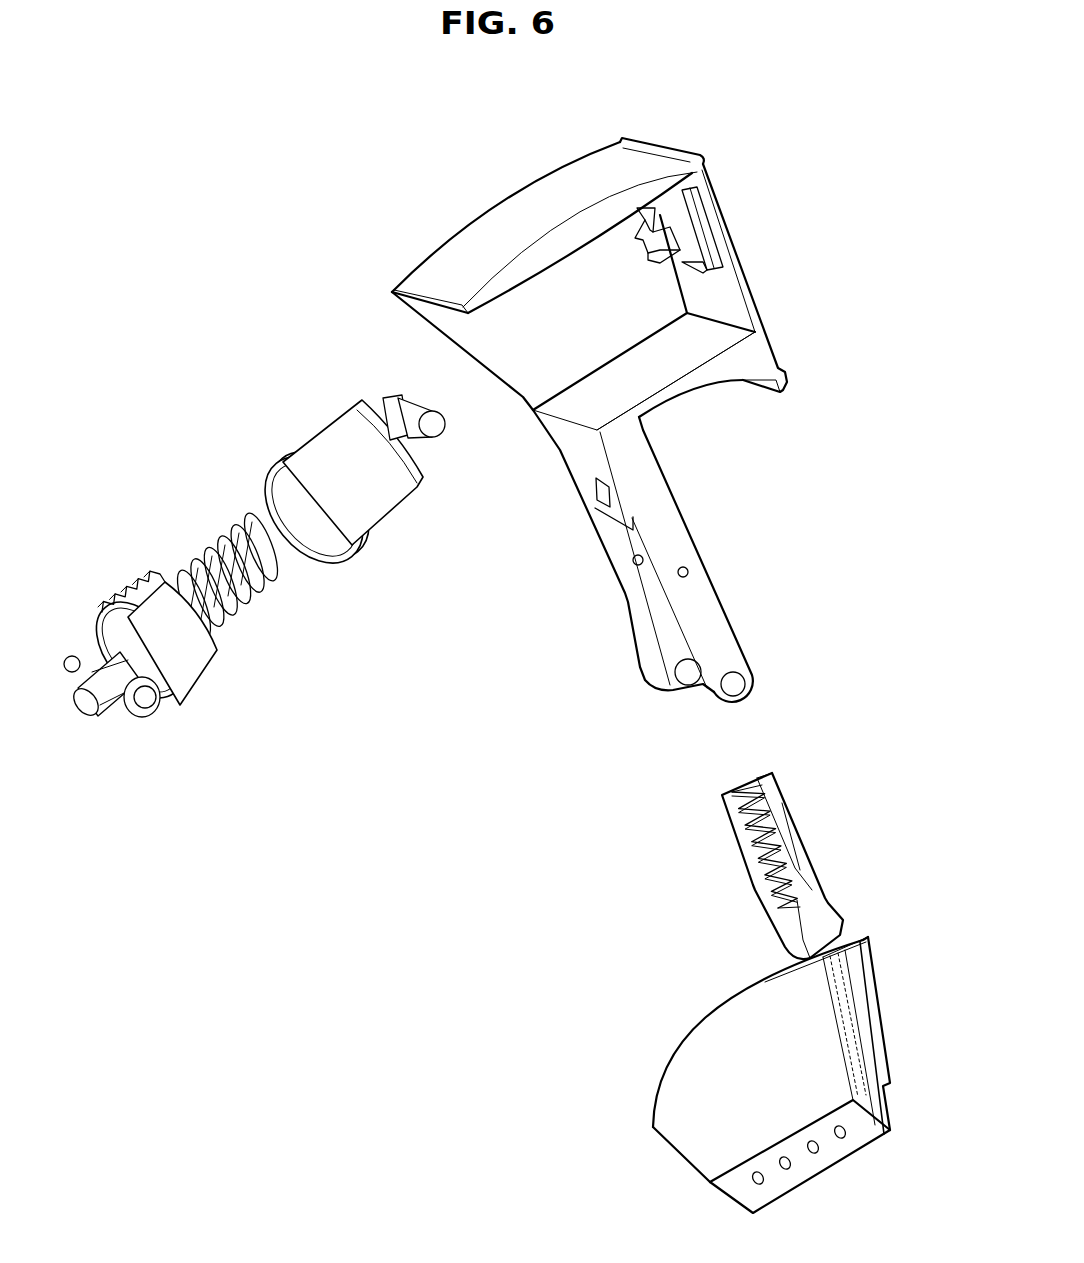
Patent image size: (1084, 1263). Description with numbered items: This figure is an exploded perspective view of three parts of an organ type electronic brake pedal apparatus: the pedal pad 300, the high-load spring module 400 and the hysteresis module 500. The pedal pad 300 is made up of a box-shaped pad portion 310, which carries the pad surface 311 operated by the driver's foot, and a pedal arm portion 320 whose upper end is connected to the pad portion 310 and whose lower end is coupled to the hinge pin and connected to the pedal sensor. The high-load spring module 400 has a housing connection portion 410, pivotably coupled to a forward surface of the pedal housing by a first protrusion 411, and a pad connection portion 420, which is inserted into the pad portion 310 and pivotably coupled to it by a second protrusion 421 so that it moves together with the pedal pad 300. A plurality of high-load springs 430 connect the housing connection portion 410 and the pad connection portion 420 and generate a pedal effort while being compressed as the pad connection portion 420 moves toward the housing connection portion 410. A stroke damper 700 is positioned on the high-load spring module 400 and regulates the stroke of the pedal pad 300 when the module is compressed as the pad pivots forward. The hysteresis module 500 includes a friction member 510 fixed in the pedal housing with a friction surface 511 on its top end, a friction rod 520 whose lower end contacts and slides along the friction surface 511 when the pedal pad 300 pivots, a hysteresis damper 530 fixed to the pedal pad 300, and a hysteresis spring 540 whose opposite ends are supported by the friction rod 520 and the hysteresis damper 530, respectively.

The pedal pad 300 is at (485, 206).
The pad portion 310 is at (572, 183).
The pad surface 311 is at (757, 296).
The pedal arm portion 320 is at (667, 640).
The high-load spring module 400 is at (202, 541).
The housing connection portion 410 is at (188, 650).
The first protrusion 411 is at (145, 705).
The pad connection portion 420 is at (313, 460).
The second protrusion 421 is at (437, 437).
The high-load springs 430 is at (253, 607).
The stroke damper 700 is at (127, 593).
The hysteresis module 500 is at (664, 1071).
The friction member 510 is at (702, 1147).
The friction surface 511 is at (702, 1027).
The friction rod 520 is at (810, 887).
The hysteresis damper 530 is at (772, 792).
The hysteresis spring 540 is at (757, 840).